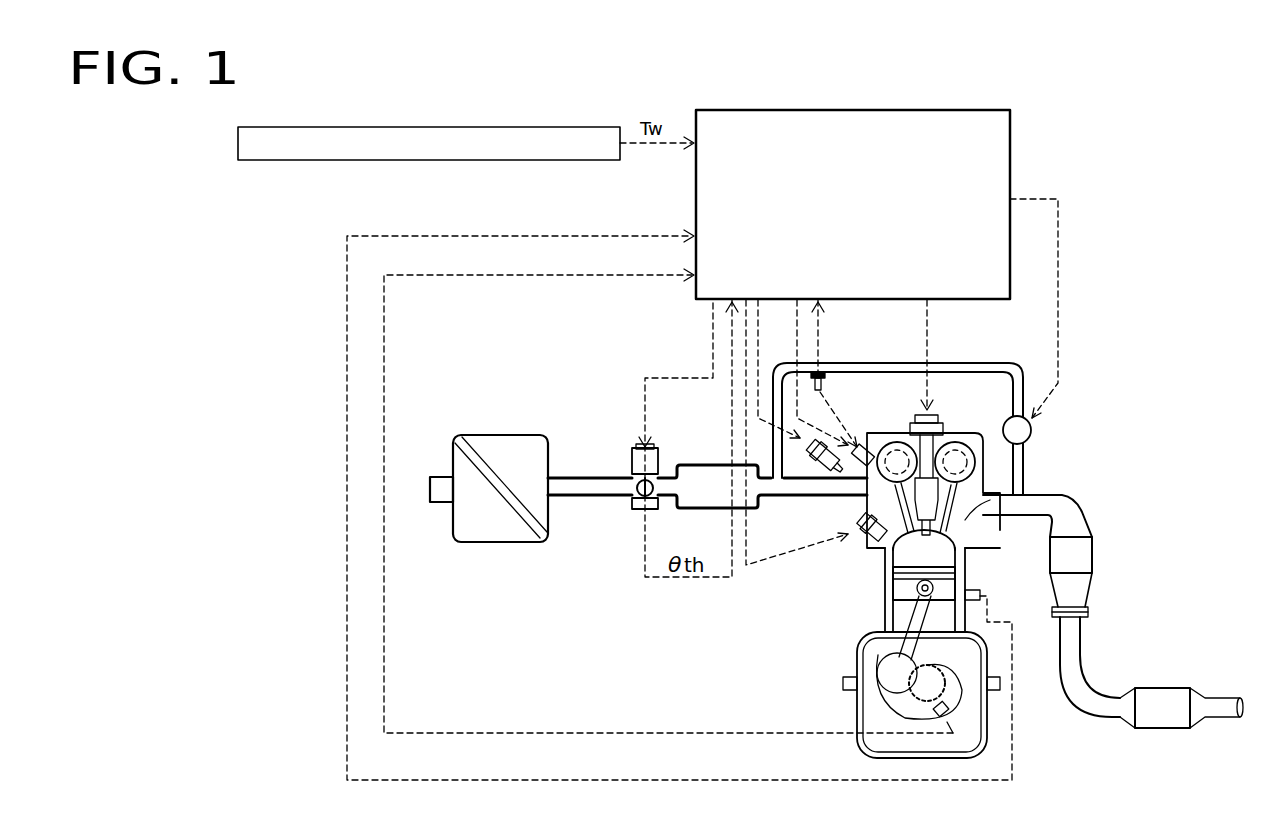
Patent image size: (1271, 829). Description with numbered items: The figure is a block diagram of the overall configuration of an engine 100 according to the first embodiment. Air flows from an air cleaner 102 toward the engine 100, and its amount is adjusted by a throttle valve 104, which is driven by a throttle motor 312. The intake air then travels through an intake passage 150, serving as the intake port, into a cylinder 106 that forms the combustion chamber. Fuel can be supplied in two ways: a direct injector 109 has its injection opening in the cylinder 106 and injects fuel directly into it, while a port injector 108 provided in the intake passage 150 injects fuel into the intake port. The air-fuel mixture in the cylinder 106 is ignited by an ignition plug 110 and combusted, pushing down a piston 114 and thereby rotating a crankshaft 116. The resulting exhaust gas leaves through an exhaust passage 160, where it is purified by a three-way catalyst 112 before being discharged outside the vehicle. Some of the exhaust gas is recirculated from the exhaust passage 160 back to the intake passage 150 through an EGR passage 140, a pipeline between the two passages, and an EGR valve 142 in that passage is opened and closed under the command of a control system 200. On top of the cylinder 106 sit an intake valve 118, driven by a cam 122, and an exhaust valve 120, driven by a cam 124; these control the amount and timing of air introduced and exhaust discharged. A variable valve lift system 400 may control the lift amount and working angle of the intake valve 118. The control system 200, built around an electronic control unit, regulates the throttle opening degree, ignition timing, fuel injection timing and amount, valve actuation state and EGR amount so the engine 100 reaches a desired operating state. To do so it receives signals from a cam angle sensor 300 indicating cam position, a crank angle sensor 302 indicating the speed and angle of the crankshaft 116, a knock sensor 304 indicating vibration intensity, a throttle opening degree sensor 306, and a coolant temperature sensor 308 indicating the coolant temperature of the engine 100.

The engine 100 is at (1092, 398).
The air cleaner 102 is at (505, 435).
The throttle valve 104 is at (655, 476).
The cylinder 106 is at (905, 568).
The port injector 108 is at (790, 497).
The direct injector 109 is at (858, 518).
The ignition plug 110 is at (942, 415).
The three-way catalyst 112 is at (1092, 550).
The piston 114 is at (906, 606).
The crankshaft 116 is at (955, 718).
The intake valve 118 is at (883, 538).
The exhaust valve 120 is at (970, 518).
The cam 122 is at (885, 455).
The cam 124 is at (965, 455).
The EGR passage 140 is at (970, 363).
The EGR valve 142 is at (1028, 442).
The intake passage 150 is at (807, 455).
The exhaust passage 160 is at (1057, 494).
The control system 200 is at (852, 110).
The cam angle sensor 300 is at (820, 373).
The crank angle sensor 302 is at (960, 705).
The knock sensor 304 is at (982, 592).
The throttle opening degree sensor 306 is at (636, 510).
The coolant temperature sensor 308 is at (238, 143).
The throttle motor 312 is at (630, 456).
The variable valve lift (VVL) system 400 is at (890, 455).